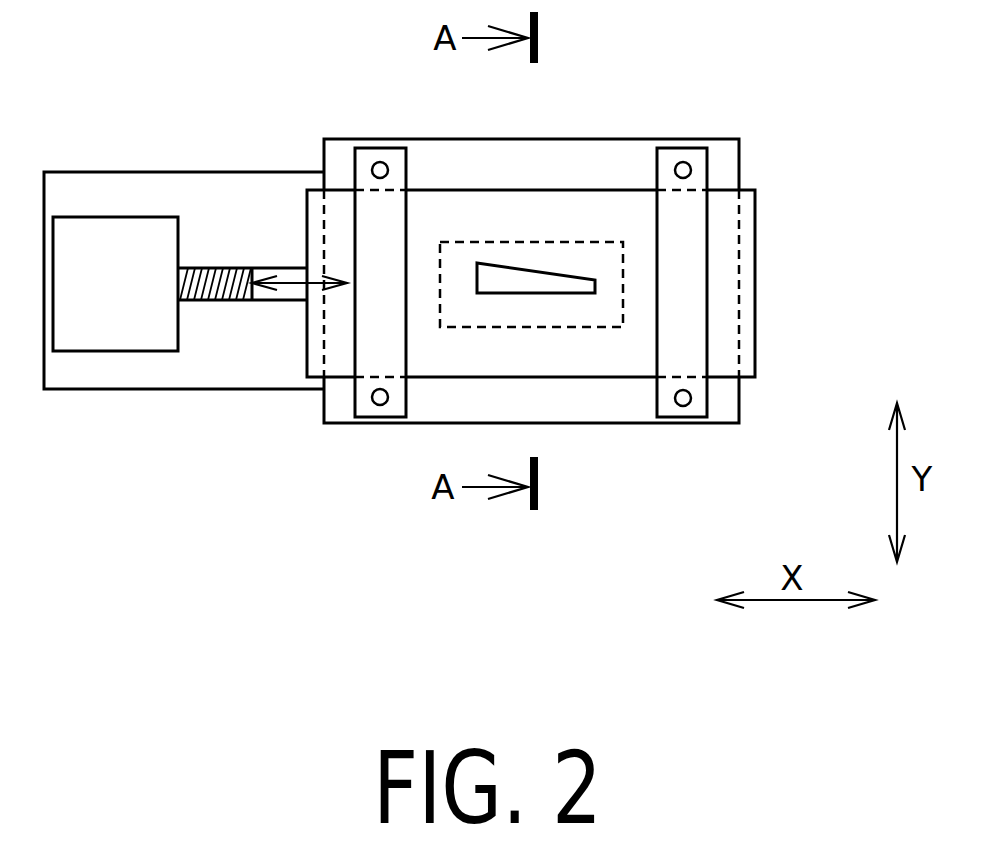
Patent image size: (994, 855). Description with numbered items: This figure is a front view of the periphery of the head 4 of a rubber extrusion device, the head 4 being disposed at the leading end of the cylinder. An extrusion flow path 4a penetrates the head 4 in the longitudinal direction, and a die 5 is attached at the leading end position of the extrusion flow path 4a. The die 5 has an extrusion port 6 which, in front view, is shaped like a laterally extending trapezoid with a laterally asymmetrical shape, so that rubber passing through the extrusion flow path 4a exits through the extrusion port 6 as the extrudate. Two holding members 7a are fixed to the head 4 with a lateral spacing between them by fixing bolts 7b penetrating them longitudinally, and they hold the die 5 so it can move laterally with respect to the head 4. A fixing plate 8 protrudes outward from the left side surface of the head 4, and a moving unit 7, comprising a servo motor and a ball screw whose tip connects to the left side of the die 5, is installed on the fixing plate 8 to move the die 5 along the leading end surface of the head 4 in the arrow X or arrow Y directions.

The head 4 is at (337, 110).
The extrusion flow path 4a is at (568, 327).
The die 5 is at (620, 170).
The extrusion port 6 is at (500, 293).
The moving unit 7 is at (225, 214).
The holding members 7a is at (373, 333).
The fixing bolts 7b is at (691, 170).
The fixing plate 8 is at (115, 187).